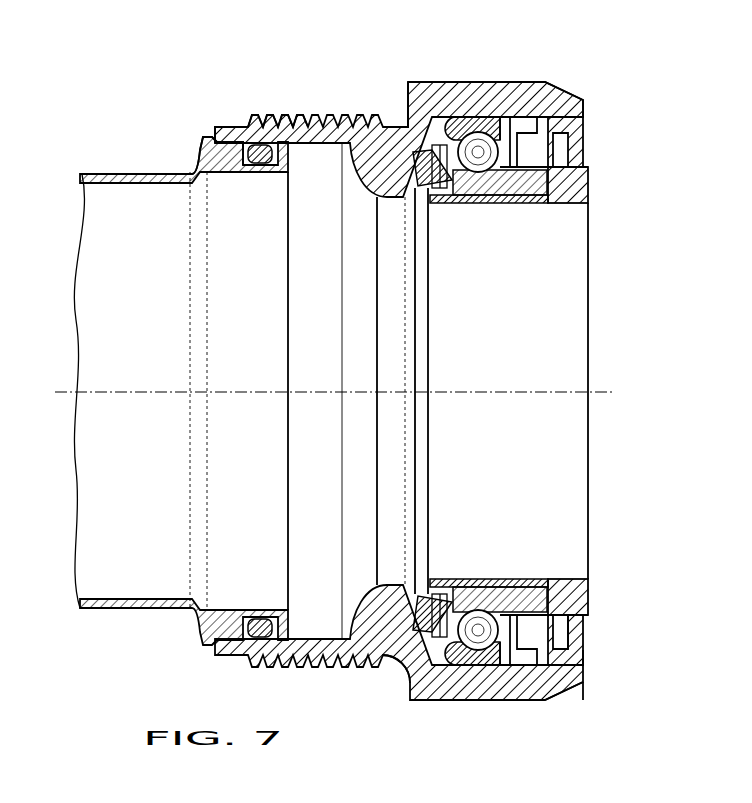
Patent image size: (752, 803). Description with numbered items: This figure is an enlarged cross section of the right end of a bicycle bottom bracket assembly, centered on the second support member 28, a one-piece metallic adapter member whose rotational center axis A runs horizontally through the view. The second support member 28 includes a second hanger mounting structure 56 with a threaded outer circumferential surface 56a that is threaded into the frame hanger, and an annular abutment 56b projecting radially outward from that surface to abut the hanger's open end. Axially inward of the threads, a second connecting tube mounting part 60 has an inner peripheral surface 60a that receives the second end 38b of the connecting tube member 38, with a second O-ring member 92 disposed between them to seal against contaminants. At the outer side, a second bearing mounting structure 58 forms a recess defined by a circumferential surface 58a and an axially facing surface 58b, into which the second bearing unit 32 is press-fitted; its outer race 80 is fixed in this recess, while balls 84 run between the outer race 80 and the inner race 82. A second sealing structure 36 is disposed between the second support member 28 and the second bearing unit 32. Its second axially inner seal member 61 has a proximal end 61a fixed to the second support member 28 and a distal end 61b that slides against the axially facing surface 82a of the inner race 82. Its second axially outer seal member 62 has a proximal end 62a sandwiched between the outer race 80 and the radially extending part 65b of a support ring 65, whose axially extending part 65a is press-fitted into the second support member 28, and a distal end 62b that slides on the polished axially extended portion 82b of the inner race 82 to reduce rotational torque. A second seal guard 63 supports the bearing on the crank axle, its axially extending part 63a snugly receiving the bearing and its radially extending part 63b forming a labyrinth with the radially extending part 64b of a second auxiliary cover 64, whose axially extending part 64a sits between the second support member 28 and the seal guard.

The second support member 28 is at (531, 78).
The second bearing unit 32 is at (532, 94).
The second sealing structure 36 is at (517, 355).
The connecting tube member 38 is at (104, 168).
The second end 38b is at (196, 157).
The second hanger mounting structure 56 is at (345, 110).
The threaded outer circumferential surface 56a is at (313, 118).
The annular abutment 56b is at (405, 99).
The second bearing mounting structure 58 is at (584, 135).
The circumferential surface 58a is at (486, 119).
The axially facing surface 58b is at (451, 124).
The second connecting tube mounting part 60 is at (213, 125).
The inner peripheral surface 60a is at (230, 172).
The second axially inner seal member 61 is at (439, 369).
The proximal end 61a is at (395, 660).
The distal end 61b is at (472, 592).
The second axially outer seal member 62 is at (503, 168).
The proximal end 62a is at (503, 663).
The distal end 62b is at (562, 624).
The second seal guard 63 is at (553, 207).
The axially extending part 63a is at (525, 580).
The radially extending part 63b is at (594, 590).
The second auxiliary cover 64 is at (589, 153).
The axially extending part 64a is at (560, 658).
The radially extending part 64b is at (583, 638).
The support ring 65 is at (640, 698).
The axially extending part 65a is at (525, 697).
The radially extending part 65b is at (557, 685).
The outer race 80 is at (462, 665).
The inner race 82 is at (497, 580).
The axially facing surface 82a is at (432, 594).
The axially extended portion 82b is at (547, 617).
The balls 84 is at (482, 665).
The second O-ring member 92 is at (257, 166).
The rotational center axis A is at (173, 392).